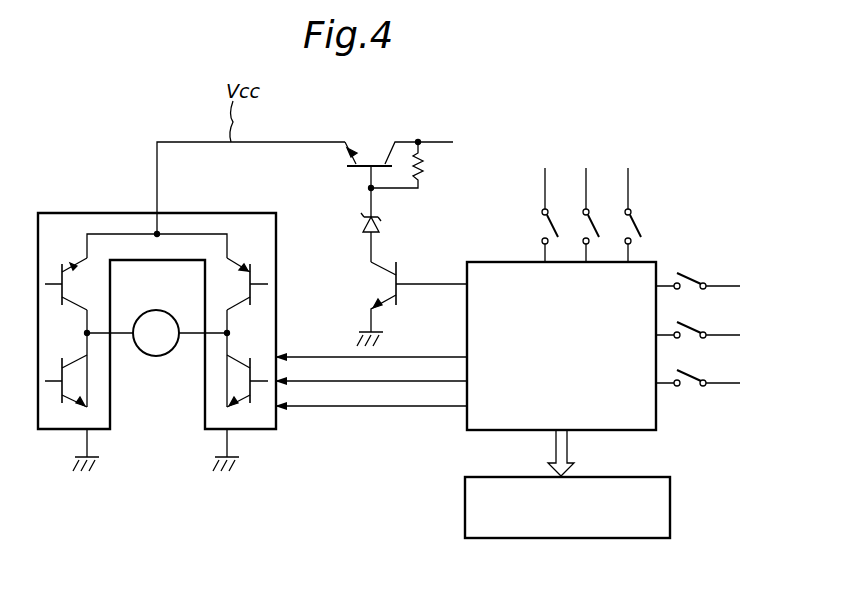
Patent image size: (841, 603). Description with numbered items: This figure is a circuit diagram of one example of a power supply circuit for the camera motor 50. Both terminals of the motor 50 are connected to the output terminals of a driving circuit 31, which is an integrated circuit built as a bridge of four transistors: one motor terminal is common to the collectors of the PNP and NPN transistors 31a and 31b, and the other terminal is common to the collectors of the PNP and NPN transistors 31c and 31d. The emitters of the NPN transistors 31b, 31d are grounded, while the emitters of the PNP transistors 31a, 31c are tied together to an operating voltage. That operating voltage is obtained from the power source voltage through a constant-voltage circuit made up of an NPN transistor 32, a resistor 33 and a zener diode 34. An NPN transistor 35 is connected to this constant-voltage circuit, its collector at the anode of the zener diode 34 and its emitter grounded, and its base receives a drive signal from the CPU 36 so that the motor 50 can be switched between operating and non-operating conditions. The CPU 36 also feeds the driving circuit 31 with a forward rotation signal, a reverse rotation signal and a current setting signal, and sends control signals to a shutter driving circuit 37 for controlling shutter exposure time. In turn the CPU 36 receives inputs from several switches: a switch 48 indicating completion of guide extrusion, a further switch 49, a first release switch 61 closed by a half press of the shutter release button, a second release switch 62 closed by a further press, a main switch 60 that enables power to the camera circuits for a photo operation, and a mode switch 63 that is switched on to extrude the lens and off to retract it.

The driving circuit 31 is at (78, 212).
The PNP transistor 31a is at (239, 262).
The NPN transistor 31b is at (233, 382).
The PNP transistor 31c is at (68, 280).
The NPN transistor 31d is at (70, 377).
The motor 50 is at (165, 312).
The NPN transistor 32 is at (373, 150).
The resistor 33 is at (426, 168).
The zener diode 34 is at (383, 222).
The NPN transistor 35 is at (383, 278).
The CPU 36 is at (473, 323).
The shutter driving circuit 37 is at (505, 538).
The switch 48 is at (690, 290).
The switch 49 is at (690, 339).
The main switch 60 is at (690, 387).
The first release switch 61 is at (578, 225).
The second release switch 62 is at (620, 228).
The mode switch 63 is at (545, 228).